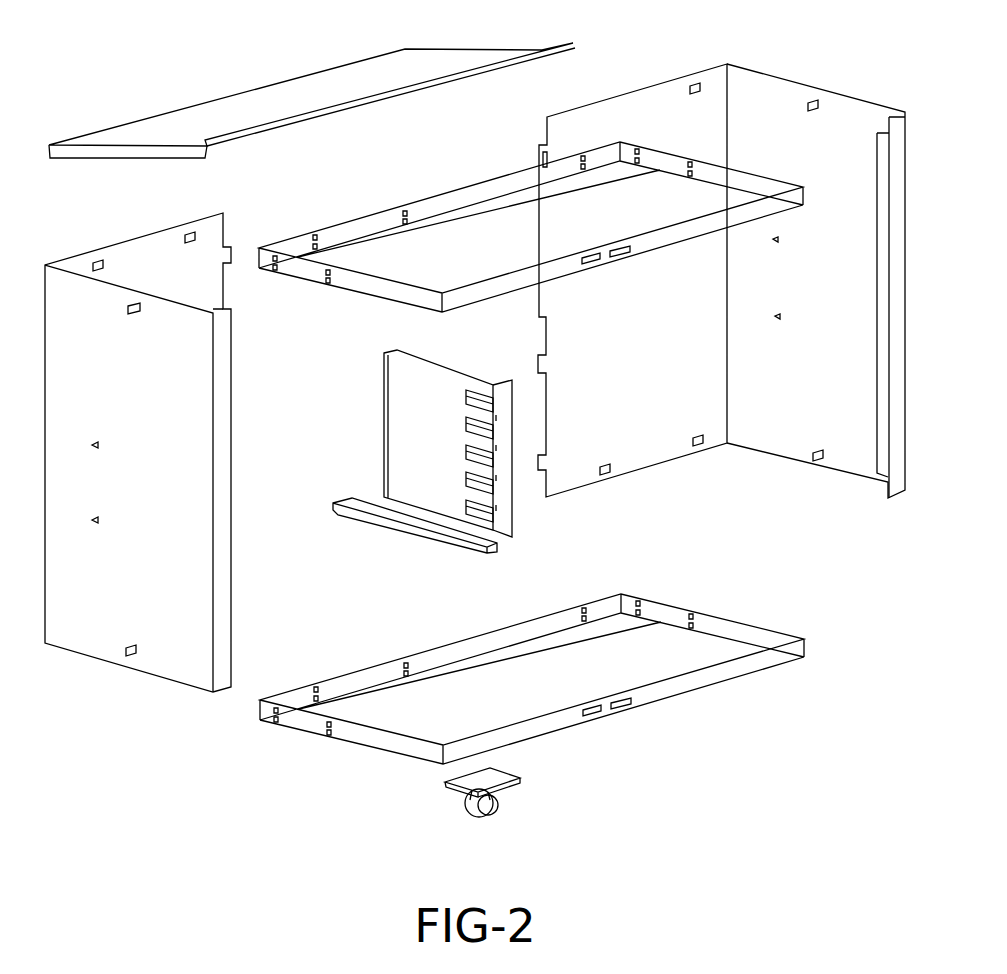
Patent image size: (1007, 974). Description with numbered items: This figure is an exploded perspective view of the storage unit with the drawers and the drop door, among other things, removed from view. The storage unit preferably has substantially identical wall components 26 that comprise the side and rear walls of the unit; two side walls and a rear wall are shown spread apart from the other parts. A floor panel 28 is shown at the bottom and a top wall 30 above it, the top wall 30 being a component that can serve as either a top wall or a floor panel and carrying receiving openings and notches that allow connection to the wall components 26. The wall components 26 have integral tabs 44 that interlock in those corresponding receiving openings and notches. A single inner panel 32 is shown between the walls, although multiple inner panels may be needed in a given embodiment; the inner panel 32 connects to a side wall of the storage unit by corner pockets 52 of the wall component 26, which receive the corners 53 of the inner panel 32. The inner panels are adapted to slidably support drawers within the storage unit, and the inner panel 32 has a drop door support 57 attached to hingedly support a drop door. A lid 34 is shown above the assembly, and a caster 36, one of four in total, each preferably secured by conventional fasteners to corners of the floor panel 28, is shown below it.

The wall component 26 is at (180, 578).
The floor panel 28 is at (705, 678).
The top wall 30 is at (485, 228).
The inner panel 32 is at (410, 458).
The lid 34 is at (350, 78).
The caster 36 is at (488, 805).
The integral tabs 44 is at (190, 236).
The corner pockets 52 is at (92, 445).
The corners 53 is at (505, 385).
The drop door support 57 is at (395, 515).